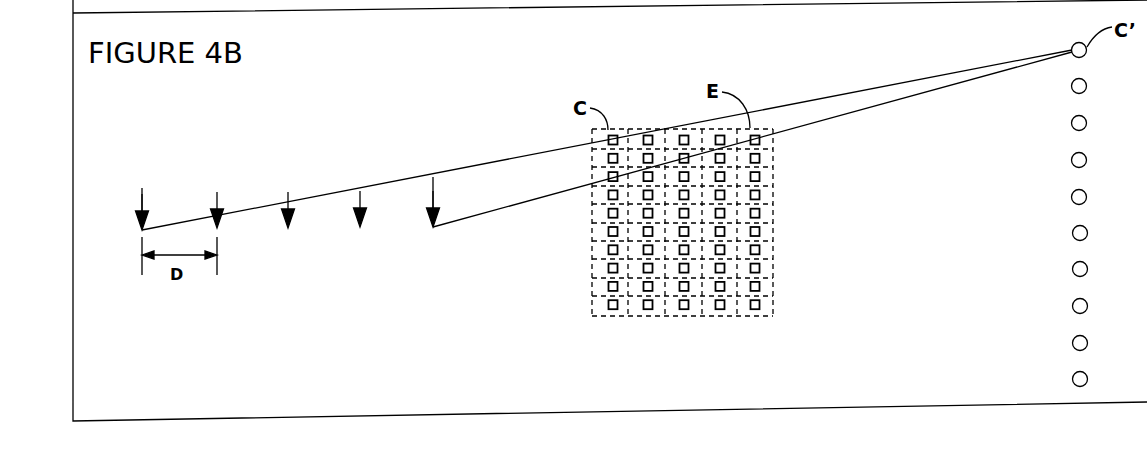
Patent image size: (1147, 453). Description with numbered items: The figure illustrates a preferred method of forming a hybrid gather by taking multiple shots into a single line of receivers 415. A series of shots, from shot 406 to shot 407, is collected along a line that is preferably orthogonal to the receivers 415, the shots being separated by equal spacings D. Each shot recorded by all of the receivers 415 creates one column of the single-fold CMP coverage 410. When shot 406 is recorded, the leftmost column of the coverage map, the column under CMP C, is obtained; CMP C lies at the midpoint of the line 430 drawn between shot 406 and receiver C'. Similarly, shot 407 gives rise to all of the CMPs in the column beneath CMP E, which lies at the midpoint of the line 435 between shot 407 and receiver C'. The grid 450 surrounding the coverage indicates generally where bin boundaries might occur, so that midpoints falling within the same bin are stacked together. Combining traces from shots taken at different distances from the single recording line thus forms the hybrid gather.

The shot 406 is at (142, 188).
The shot 407 is at (433, 177).
The single-fold CMP coverage 410 is at (755, 318).
The receivers 415 is at (1070, 183).
The line 430 is at (833, 92).
The line 435 is at (890, 100).
The grid 450 is at (590, 263).